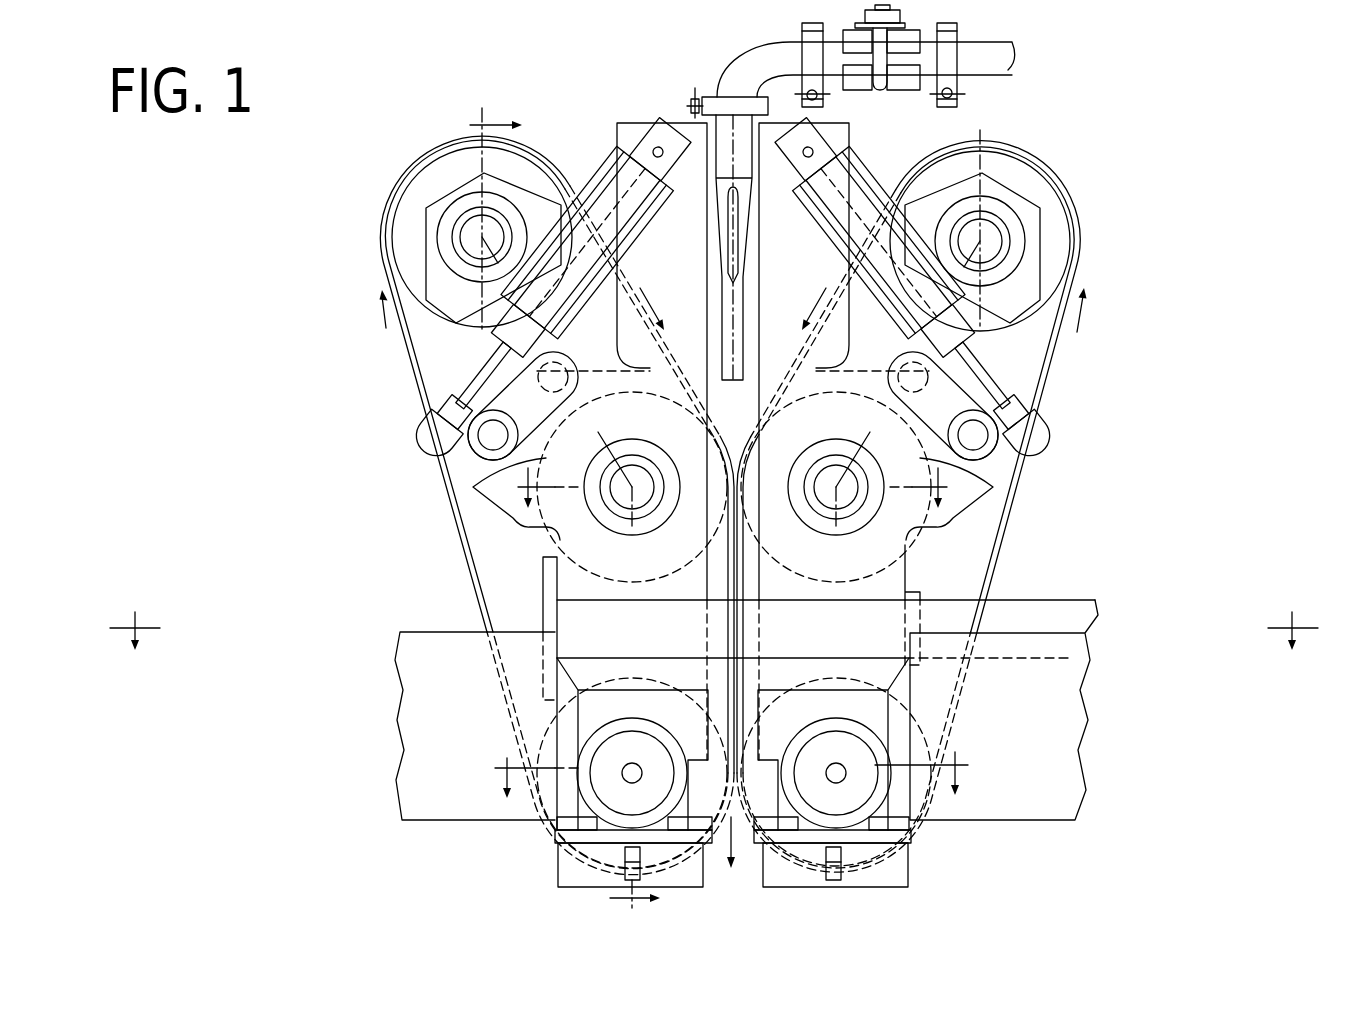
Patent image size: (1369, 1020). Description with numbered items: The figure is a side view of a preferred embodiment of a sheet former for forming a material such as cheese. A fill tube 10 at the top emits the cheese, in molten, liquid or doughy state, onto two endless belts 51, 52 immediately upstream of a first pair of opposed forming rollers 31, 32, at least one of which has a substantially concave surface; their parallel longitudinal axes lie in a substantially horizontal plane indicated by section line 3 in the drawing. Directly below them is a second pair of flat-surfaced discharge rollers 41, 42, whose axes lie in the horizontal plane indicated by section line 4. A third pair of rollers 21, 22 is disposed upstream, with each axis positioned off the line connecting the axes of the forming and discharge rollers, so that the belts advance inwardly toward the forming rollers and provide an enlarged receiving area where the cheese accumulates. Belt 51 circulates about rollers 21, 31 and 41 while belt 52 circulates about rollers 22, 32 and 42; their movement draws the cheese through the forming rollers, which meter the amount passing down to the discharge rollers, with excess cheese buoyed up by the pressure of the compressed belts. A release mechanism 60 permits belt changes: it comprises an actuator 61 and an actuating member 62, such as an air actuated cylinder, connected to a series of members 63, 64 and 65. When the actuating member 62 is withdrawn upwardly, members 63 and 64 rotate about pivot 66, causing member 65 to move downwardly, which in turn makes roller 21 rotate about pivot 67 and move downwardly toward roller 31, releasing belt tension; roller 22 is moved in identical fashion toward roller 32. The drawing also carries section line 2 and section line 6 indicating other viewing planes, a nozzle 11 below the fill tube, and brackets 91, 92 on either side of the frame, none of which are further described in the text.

The section line 2- 2 is at (575, 499).
The line 3— 3 is at (732, 478).
The line 4— 4 is at (732, 766).
The section line 6- 6 is at (713, 624).
The fill tube 10 is at (745, 77).
The nozzle 11 is at (731, 387).
The roller 21 is at (410, 203).
The roller 22 is at (1057, 240).
The forming roller 31 is at (560, 527).
The forming roller 32 is at (990, 487).
The discharge roller 41 is at (563, 807).
The discharge roller 42 is at (895, 812).
The endless belt 51 is at (483, 610).
The endless belt 52 is at (990, 590).
The release mechanism 60 is at (597, 160).
The actuator 61 is at (593, 190).
The actuating member 62 is at (483, 370).
The member 63 is at (472, 450).
The member 64 is at (537, 414).
The member 65 is at (560, 350).
The pivot 66 is at (438, 440).
The pivot 67 is at (380, 287).
The left bracket 91 is at (490, 492).
The right bracket 92 is at (950, 512).